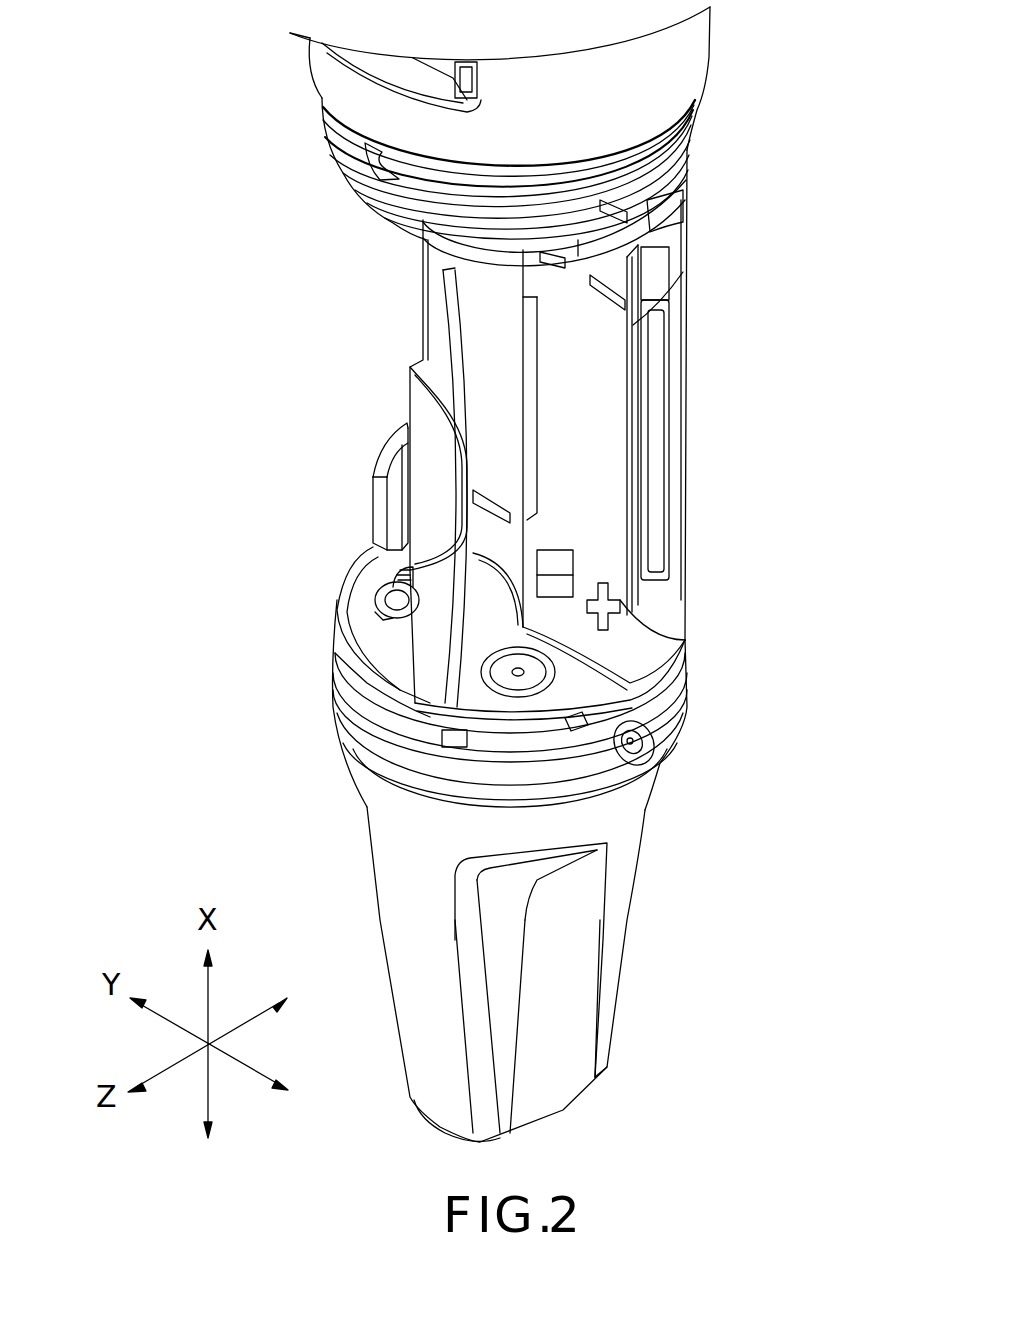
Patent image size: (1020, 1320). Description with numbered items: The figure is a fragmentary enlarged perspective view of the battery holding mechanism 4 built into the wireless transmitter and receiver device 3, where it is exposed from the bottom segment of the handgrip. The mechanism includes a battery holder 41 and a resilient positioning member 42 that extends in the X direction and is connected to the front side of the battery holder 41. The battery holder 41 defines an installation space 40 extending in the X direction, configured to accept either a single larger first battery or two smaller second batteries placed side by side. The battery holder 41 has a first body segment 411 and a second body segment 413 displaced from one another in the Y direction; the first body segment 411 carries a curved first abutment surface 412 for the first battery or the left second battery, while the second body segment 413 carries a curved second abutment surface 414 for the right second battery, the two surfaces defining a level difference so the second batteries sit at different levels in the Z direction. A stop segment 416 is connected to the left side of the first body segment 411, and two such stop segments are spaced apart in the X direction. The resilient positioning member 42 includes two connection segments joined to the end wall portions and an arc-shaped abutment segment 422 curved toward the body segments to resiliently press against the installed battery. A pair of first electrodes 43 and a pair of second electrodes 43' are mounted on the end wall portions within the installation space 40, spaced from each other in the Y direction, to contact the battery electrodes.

The wireless transmitter and receiver device 3 is at (688, 52).
The battery holding mechanism 4 is at (364, 690).
The installation space 40 is at (368, 650).
The battery holder 41 is at (688, 588).
The first body segment 411 is at (485, 300).
The first abutment surface 412 is at (493, 345).
The second body segment 413 is at (635, 442).
The second abutment surface 414 is at (612, 340).
The stop segment 416 is at (373, 478).
The resilient positioning member 42 is at (402, 520).
The abutment segment 422 is at (445, 425).
The first electrodes 43 is at (342, 586).
The second electrodes 43' is at (618, 695).